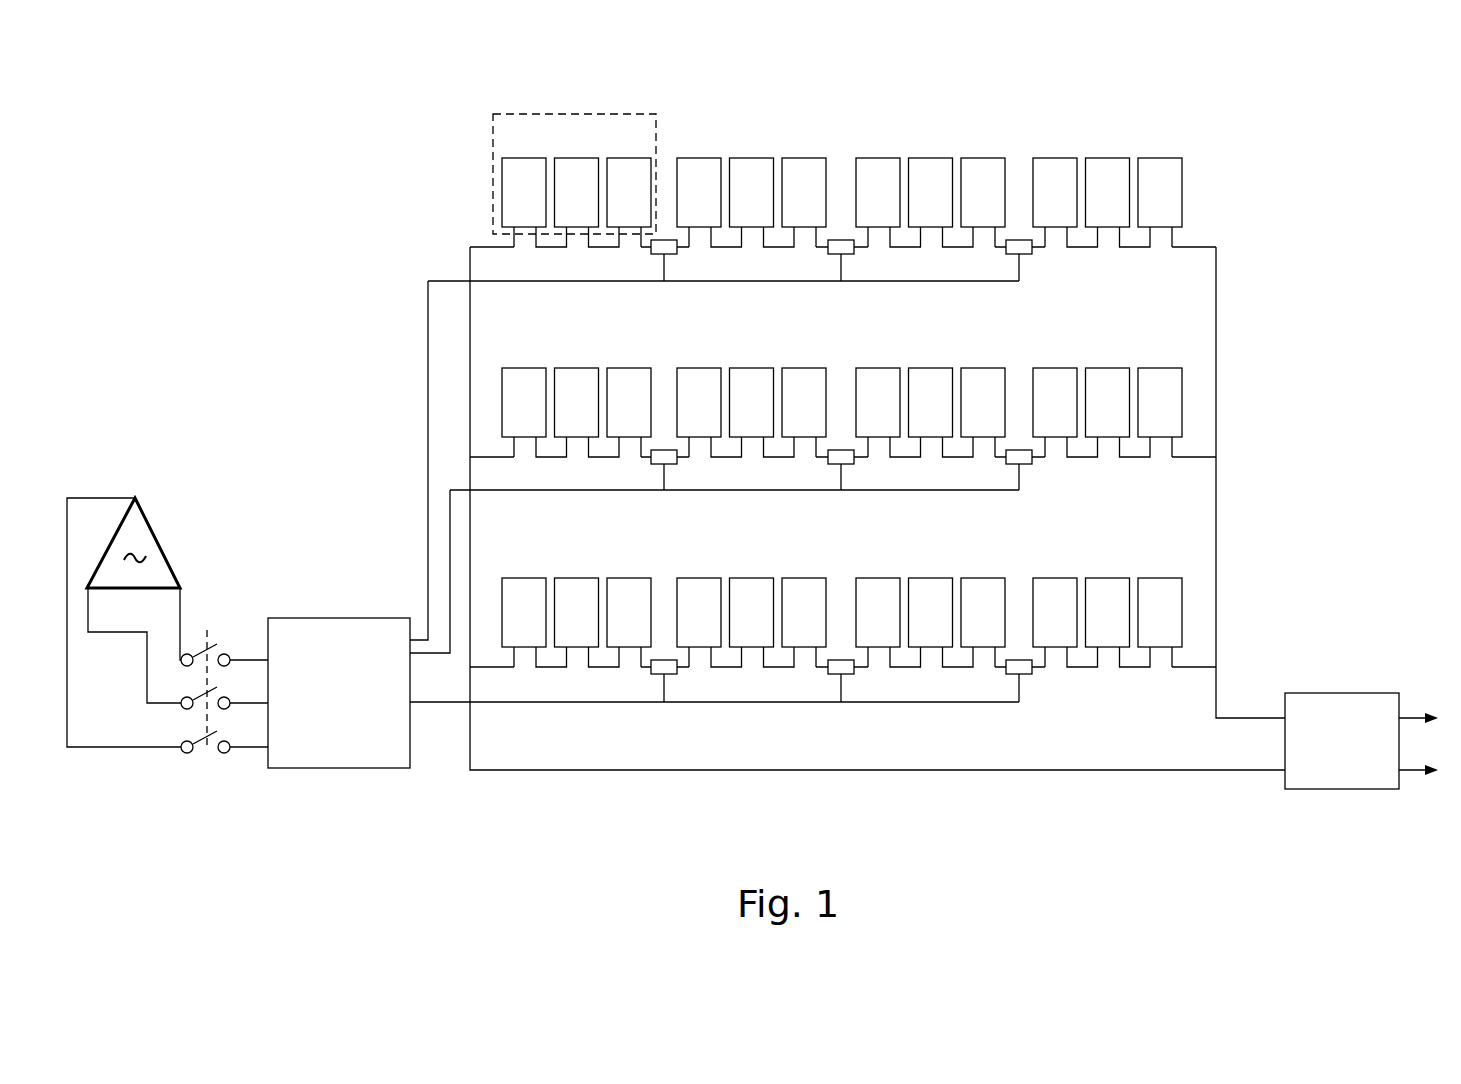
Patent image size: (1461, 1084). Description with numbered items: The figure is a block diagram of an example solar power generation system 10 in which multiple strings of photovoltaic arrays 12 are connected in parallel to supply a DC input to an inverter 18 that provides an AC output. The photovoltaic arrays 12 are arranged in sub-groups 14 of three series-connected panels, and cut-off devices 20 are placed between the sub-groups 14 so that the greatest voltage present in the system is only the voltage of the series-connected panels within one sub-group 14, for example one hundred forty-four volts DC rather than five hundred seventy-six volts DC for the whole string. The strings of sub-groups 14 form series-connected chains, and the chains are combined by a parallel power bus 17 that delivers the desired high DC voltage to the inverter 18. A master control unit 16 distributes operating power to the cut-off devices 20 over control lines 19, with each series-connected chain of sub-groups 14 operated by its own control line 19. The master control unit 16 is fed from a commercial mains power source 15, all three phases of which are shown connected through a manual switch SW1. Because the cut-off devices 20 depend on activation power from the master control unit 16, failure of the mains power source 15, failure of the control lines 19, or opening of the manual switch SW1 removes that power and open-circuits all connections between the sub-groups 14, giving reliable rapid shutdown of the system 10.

The solar power generation system 10 is at (1212, 144).
The photovoltaic array 12 is at (572, 157).
The sub-group 14 is at (574, 168).
The commercial mains power source 15 is at (155, 531).
The master control unit 16 is at (330, 745).
The parallel power bus 17 is at (1234, 719).
The inverter 18 is at (1330, 780).
The control line 19 is at (512, 282).
The cut-off device 20 is at (672, 253).
The manual switch SW1 is at (214, 626).